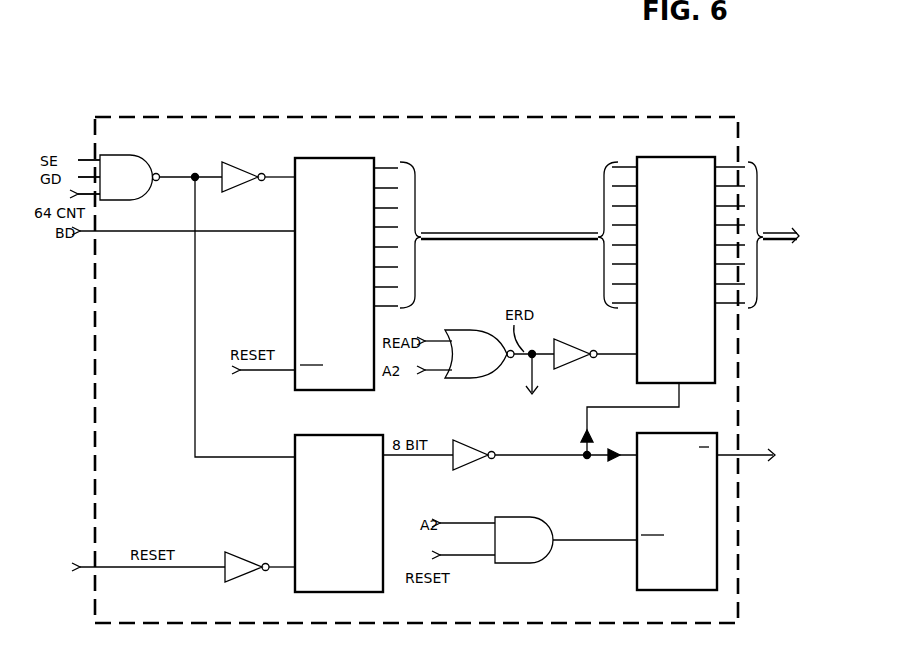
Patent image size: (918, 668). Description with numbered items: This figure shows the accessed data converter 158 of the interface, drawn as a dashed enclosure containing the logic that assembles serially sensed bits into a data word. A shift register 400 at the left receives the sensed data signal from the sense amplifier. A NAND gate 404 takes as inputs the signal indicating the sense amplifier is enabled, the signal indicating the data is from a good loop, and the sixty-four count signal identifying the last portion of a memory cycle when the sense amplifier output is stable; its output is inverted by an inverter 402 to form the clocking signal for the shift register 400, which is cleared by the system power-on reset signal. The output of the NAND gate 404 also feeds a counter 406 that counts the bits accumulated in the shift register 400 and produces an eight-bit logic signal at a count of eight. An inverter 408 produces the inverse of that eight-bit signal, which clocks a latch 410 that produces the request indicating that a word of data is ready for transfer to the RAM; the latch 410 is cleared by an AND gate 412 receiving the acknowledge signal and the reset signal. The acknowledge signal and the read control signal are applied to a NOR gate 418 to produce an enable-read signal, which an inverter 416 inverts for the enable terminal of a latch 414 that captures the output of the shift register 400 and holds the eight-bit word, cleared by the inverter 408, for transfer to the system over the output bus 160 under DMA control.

The accessed data converter 158 is at (413, 117).
The output data bus 160 is at (783, 240).
The shift register 400 is at (295, 280).
The inverter 402 is at (240, 170).
The NAND gate 404 is at (145, 162).
The counter 406 is at (295, 492).
The inverter 408 is at (452, 468).
The latch 410 is at (637, 568).
The AND gate 412 is at (527, 565).
The latch 414 is at (668, 168).
The inverter 416 is at (572, 345).
The NOR gate 418 is at (478, 337).